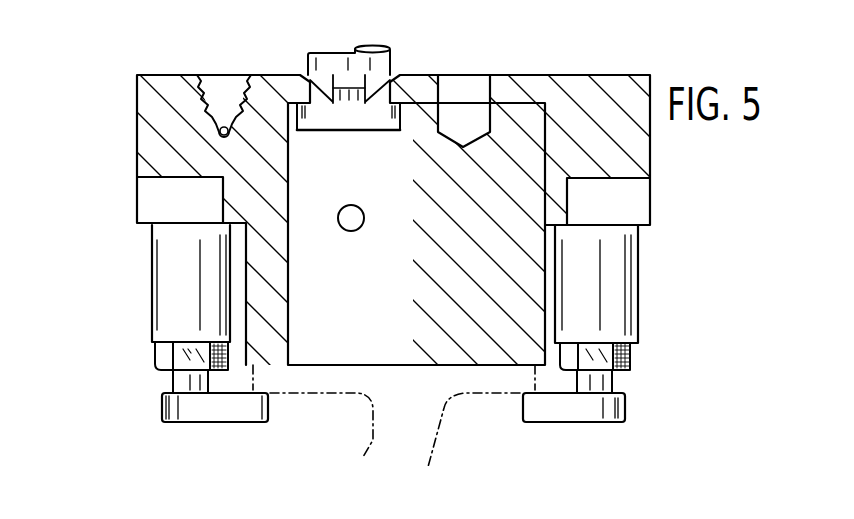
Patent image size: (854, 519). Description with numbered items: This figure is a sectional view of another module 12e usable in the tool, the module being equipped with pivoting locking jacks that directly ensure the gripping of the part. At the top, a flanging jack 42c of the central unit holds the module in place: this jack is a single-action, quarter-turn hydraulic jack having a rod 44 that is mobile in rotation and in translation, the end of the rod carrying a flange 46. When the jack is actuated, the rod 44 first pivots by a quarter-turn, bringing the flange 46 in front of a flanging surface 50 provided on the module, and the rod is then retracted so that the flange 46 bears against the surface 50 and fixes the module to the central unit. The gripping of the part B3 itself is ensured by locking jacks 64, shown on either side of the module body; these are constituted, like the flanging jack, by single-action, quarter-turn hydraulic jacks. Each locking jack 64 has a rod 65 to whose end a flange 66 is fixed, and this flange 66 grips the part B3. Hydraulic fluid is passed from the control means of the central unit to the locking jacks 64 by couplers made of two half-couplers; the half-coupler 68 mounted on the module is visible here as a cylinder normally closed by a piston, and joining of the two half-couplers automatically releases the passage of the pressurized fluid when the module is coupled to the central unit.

The gripping module 12e is at (137, 107).
The half-coupler 68 is at (222, 103).
The flanging jack 42c is at (323, 51).
The rod 44 is at (352, 95).
The flange 46 is at (317, 122).
The flanging surface 50 is at (388, 122).
The locking jack 64 is at (172, 262).
The rod 65 is at (188, 380).
The flange 66 is at (195, 408).
The part B3 is at (363, 445).